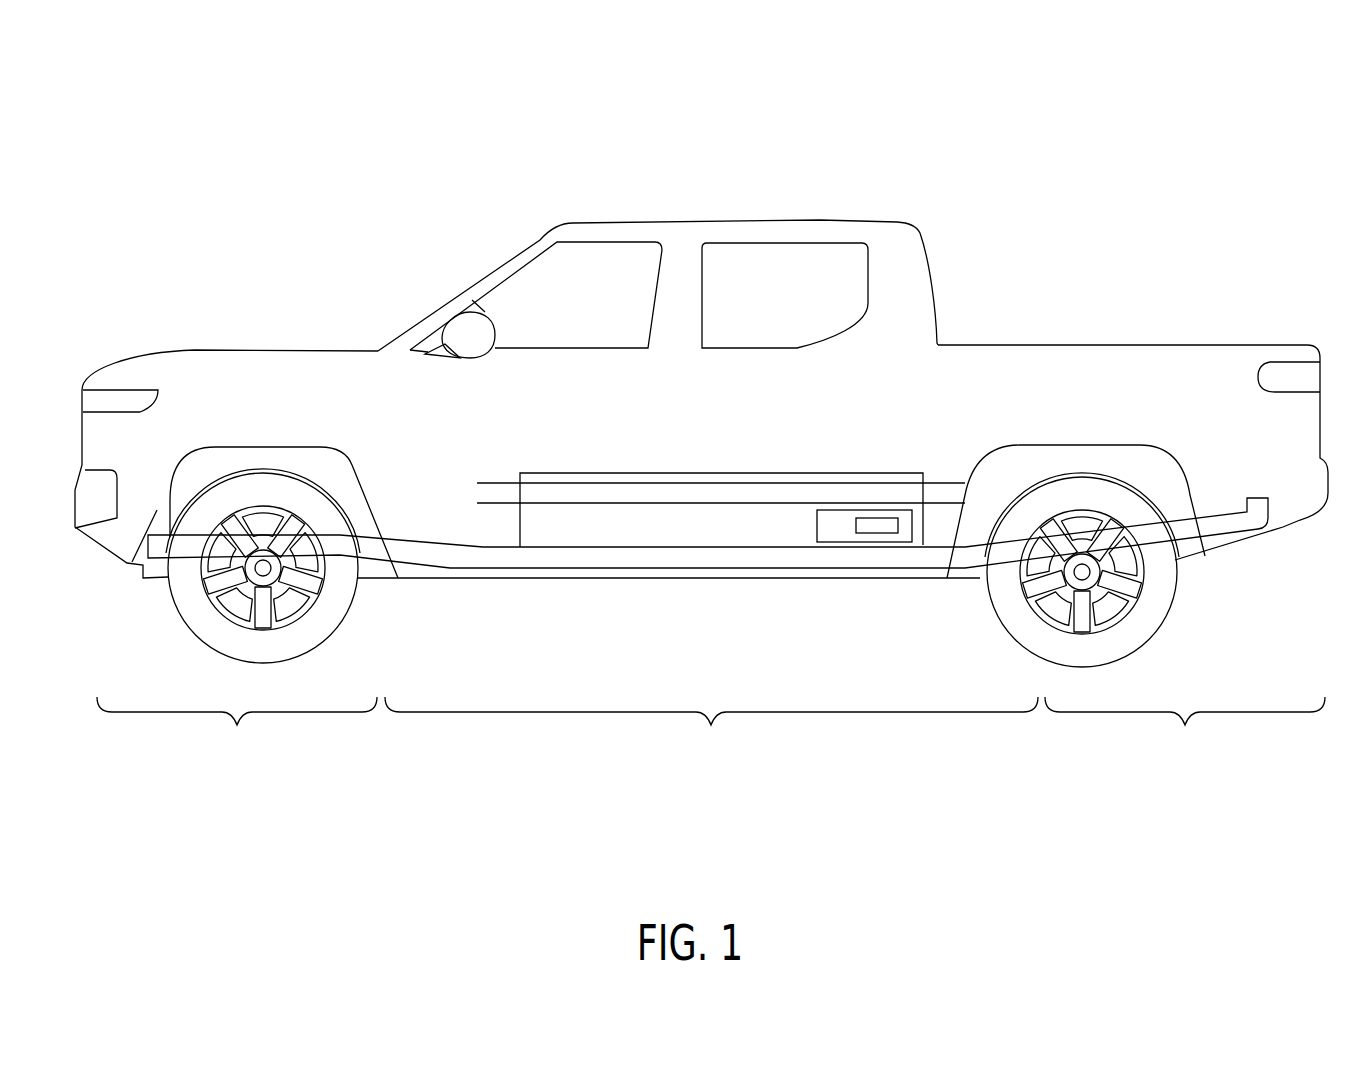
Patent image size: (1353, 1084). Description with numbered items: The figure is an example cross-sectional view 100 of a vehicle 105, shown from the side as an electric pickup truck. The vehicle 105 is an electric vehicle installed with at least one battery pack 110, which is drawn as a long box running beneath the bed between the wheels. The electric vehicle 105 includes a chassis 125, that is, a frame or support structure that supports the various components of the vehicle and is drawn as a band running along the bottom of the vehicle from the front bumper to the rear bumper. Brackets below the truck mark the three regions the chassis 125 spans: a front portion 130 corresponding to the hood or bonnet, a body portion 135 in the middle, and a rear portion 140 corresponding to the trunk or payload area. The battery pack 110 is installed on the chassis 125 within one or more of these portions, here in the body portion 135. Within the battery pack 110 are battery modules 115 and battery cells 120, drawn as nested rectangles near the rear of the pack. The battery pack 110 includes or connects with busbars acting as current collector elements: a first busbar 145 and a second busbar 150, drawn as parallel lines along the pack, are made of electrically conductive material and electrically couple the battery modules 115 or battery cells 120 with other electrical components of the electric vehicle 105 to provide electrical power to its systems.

The cross-sectional view 100 is at (313, 142).
The vehicle 105 is at (637, 212).
The battery pack 110 is at (735, 473).
The battery module 115 is at (902, 542).
The battery cell 120 is at (880, 533).
The chassis 125 is at (162, 534).
The front portion 130 is at (237, 738).
The body portion 135 is at (711, 738).
The rear portion 140 is at (1185, 738).
The first busbar 145 is at (617, 483).
The second busbar 150 is at (573, 503).